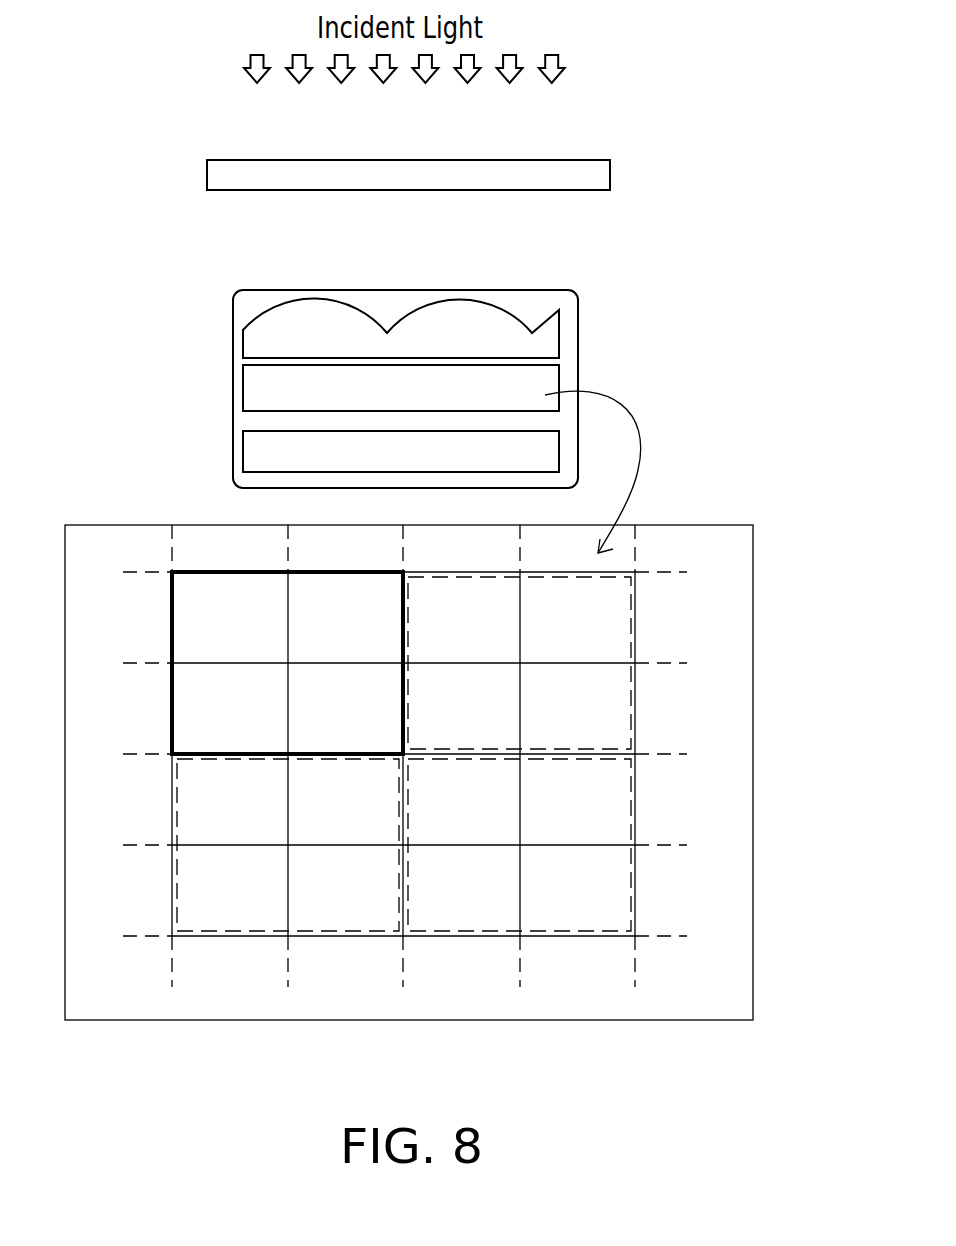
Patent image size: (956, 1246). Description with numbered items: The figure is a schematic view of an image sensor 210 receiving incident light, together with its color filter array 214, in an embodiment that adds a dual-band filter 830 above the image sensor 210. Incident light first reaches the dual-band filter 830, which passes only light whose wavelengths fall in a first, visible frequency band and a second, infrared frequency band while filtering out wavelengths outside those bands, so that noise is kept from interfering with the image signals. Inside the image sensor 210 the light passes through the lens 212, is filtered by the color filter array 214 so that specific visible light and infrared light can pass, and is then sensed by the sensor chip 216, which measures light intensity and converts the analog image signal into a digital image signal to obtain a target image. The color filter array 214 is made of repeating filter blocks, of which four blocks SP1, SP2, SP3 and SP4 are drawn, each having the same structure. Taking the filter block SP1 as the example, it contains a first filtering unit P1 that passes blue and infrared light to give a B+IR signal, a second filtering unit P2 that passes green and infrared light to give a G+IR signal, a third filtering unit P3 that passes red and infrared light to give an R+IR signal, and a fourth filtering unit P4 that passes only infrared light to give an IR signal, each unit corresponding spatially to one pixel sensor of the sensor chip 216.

The dual-band filter 830 is at (217, 173).
The image sensor 210 is at (243, 290).
The lens 212 is at (253, 342).
The color filter array 214 is at (253, 388).
The sensor chip 216 is at (253, 452).
The filter block SP1 is at (172, 612).
The filter block SP2 is at (632, 609).
The filter block SP3 is at (178, 792).
The filter block SP4 is at (632, 790).
The first filtering unit P1 is at (204, 580).
The second filtering unit P2 is at (328, 580).
The third filtering unit P3 is at (300, 740).
The fourth filtering unit P4 is at (184, 680).